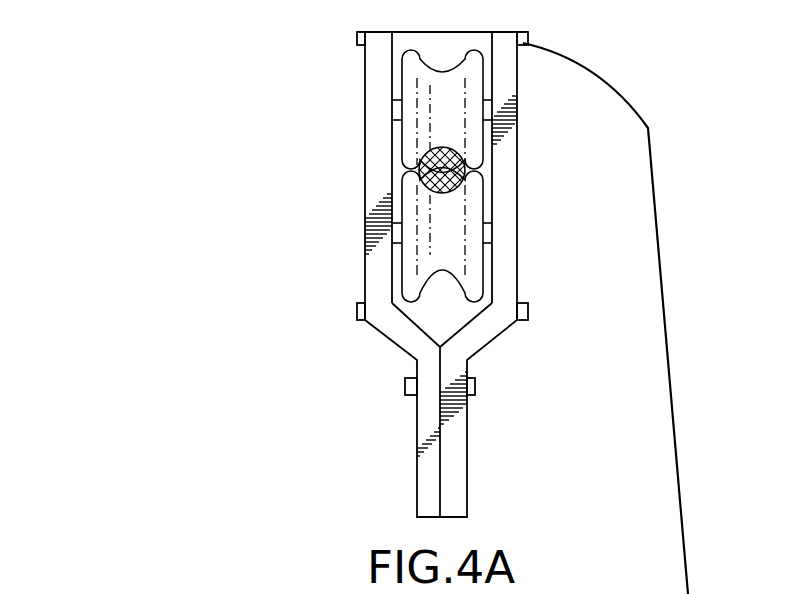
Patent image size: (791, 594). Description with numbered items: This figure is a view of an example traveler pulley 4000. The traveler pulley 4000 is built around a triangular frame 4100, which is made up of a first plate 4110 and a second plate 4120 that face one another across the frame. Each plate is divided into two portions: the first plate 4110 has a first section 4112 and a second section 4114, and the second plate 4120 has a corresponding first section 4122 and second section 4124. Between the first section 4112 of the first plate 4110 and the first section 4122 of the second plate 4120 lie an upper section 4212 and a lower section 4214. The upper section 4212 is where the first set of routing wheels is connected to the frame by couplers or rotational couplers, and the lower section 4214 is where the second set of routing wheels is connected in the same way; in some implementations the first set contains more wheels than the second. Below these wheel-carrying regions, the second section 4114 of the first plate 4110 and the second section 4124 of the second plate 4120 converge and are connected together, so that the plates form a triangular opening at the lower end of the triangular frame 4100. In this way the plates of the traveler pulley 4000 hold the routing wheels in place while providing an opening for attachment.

The traveler pulley 4000 is at (108, 140).
The triangular frame 4100 is at (703, 131).
The first plate 4110 is at (365, 260).
The first section of the first plate 4112 is at (333, 42).
The second section of the first plate 4114 is at (337, 310).
The second plate 4120 is at (503, 332).
The first section of the second plate 4122 is at (528, 73).
The second section of the second plate 4124 is at (502, 382).
The upper section 4212 is at (360, 117).
The lower section 4214 is at (360, 237).